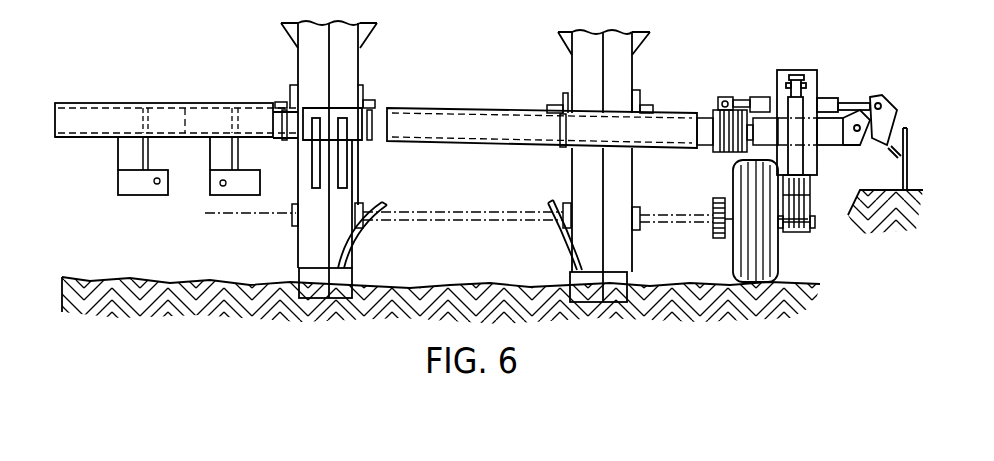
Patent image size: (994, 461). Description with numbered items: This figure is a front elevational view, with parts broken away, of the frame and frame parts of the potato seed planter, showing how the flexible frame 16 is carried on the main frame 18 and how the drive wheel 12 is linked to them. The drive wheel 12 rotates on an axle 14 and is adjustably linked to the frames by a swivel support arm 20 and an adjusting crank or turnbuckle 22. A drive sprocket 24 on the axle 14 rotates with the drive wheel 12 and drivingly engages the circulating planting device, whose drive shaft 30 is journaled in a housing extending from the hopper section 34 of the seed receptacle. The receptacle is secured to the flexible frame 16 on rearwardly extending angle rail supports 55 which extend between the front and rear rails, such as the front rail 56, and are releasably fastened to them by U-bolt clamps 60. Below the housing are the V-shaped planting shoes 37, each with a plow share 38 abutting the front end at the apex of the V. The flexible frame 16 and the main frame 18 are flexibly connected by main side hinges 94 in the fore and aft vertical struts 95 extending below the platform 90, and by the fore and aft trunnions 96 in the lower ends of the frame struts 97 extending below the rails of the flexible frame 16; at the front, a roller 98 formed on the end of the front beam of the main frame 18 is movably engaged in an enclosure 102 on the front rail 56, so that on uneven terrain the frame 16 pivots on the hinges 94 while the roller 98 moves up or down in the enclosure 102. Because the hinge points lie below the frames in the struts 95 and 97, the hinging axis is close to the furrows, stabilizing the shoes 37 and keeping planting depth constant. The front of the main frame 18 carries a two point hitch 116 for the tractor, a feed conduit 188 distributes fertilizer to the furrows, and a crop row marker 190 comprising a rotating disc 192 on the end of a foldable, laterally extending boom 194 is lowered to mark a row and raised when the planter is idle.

The drive wheel 12 is at (783, 262).
The axle 14 is at (808, 224).
The flexible frame 16 is at (68, 128).
The main frame 18 is at (90, 139).
The swivel support arm 20 is at (812, 183).
The adjusting crank or turnbuckle 22 is at (797, 155).
The drive sprocket 24 is at (712, 238).
The drive shaft 30 is at (205, 213).
The hopper section 34 is at (282, 37).
The planting shoe 37 is at (352, 278).
The plow share 38 is at (300, 277).
The angle rail support 55 is at (567, 90).
The front rail 56 is at (489, 130).
The U-bolt clamp 60 is at (292, 104).
The platform 90 is at (187, 127).
The main side hinge 94 is at (161, 181).
The vertical strut 95 is at (162, 143).
The trunnion 96 is at (130, 182).
The frame strut 97 is at (125, 155).
The roller 98 is at (760, 125).
The enclosure 102 is at (717, 112).
The two point hitch 116 is at (310, 163).
The feed conduit 188 is at (550, 200).
The crop row marker 190 is at (851, 101).
The rotating disc 192 is at (905, 128).
The boom or arm 194 is at (878, 96).